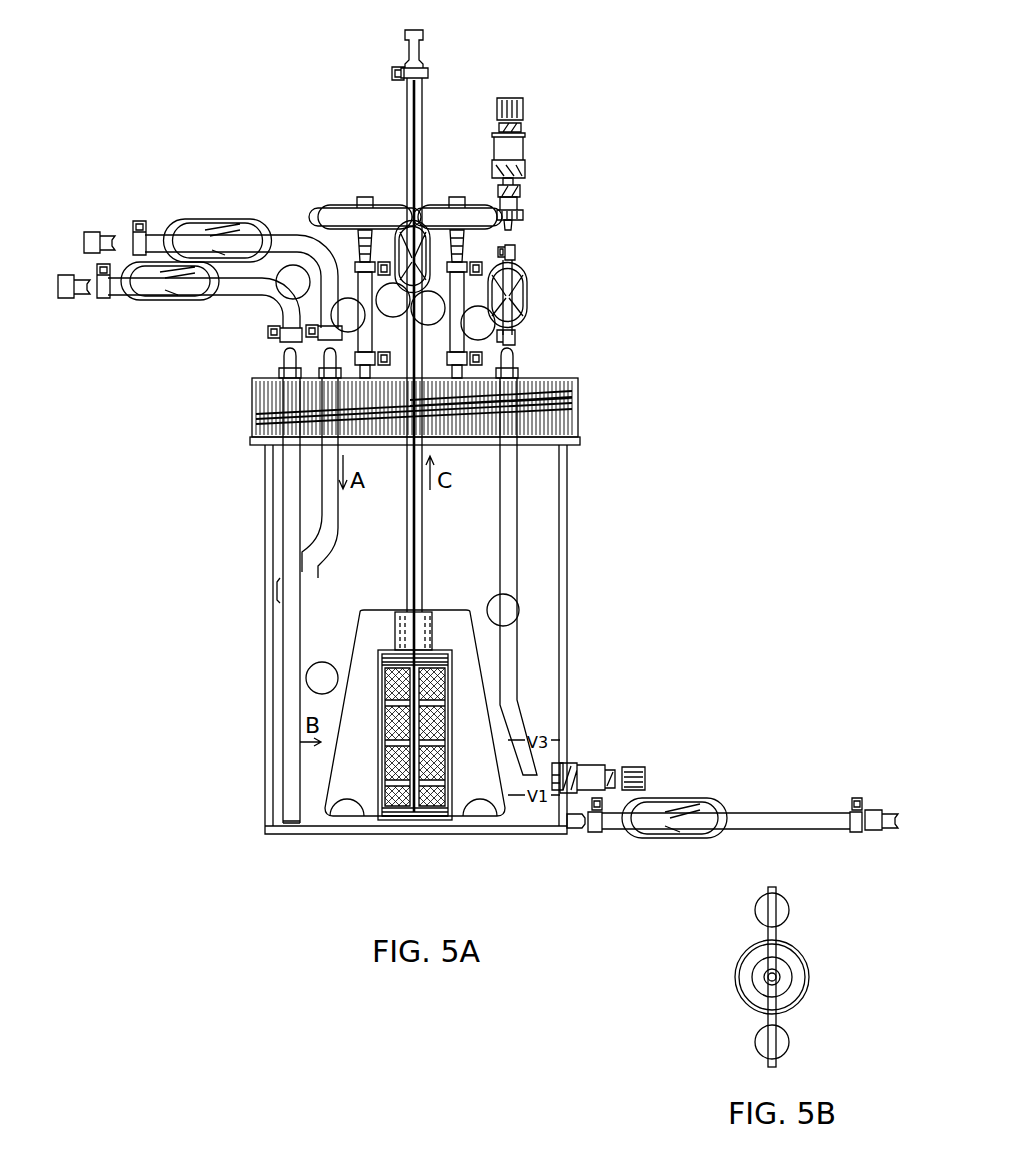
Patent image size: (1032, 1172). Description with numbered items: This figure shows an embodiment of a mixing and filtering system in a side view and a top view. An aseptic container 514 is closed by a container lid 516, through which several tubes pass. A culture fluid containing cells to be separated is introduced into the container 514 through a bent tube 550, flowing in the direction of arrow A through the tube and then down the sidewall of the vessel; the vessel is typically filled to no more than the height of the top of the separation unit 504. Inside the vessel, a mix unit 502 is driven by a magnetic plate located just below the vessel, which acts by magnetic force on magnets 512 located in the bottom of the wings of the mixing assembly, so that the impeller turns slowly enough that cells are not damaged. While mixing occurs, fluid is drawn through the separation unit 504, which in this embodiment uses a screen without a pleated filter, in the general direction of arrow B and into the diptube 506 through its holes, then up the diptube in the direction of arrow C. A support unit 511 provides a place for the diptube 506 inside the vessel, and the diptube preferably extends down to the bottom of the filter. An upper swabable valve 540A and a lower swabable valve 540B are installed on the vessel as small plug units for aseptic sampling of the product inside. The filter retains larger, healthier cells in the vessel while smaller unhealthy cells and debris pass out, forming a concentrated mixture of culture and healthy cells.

In FIG. 5A, the mix unit 502 is at (486, 800).
In FIG. 5B, the mix unit 502 is at (780, 1045).
In FIG. 5A, the separation unit 504 is at (450, 700).
In FIG. 5B, the separation unit 504 is at (805, 987).
In FIG. 5A, the diptube 506 is at (415, 565).
In FIG. 5A, the support unit 511 is at (424, 530).
In FIG. 5B, the support unit 511 is at (778, 970).
In FIG. 5A, the magnets 512 is at (452, 852).
In FIG. 5B, the magnets 512 is at (790, 905).
In FIG. 5A, the container 514 is at (568, 478).
In FIG. 5A, the container lid 516 is at (579, 392).
In FIG. 5A, the upper swabable valve 540A is at (527, 142).
In FIG. 5A, the lower swabable valve 540B is at (593, 771).
In FIG. 5A, the bent tube 550 is at (316, 566).